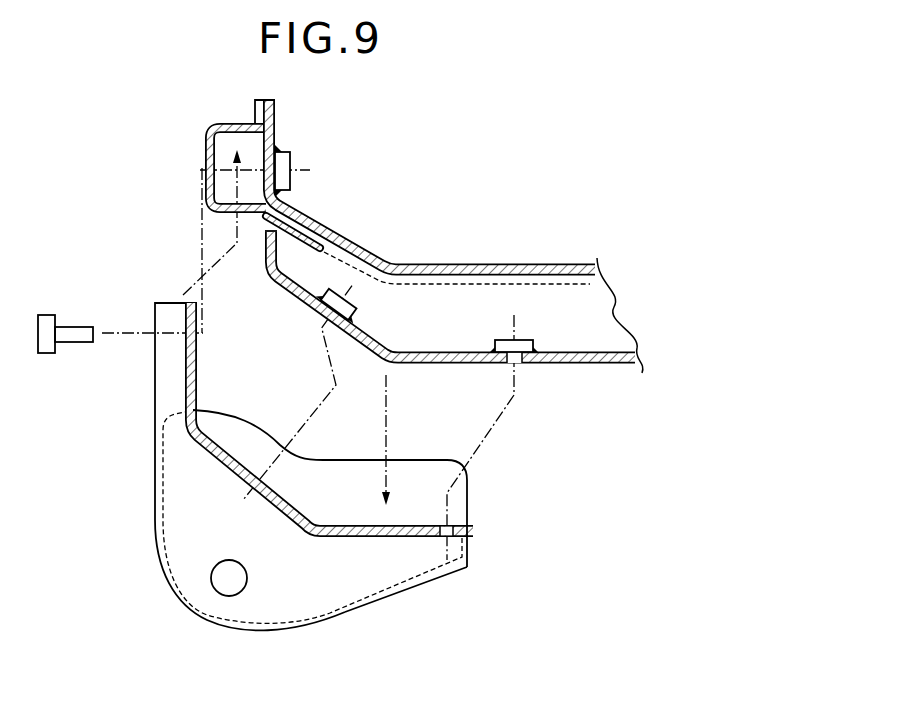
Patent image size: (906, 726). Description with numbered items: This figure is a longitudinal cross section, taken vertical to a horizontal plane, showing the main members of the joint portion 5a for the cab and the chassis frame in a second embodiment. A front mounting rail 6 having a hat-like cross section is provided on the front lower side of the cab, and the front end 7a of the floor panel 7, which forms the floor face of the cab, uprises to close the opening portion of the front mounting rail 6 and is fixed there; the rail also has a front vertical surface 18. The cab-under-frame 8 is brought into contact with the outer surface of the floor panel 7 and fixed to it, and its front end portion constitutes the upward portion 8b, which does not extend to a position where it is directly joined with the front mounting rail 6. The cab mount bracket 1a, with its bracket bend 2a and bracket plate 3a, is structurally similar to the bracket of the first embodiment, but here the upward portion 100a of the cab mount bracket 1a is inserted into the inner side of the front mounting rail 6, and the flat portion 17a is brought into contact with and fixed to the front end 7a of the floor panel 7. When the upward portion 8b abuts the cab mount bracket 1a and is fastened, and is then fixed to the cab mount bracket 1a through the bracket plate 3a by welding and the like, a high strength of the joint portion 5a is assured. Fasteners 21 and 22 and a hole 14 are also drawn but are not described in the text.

The front vertical surface 18 is at (207, 142).
The front end 7a is at (277, 128).
The bolt 22 is at (291, 173).
The front mounting rail 6 is at (207, 203).
The upward portion 8b is at (277, 260).
The floor panel 7 is at (520, 265).
The cab-under-frame 8 is at (580, 333).
The bolt 21 is at (45, 355).
The upward portion 100a is at (167, 363).
The flat portion 17a is at (198, 362).
The bracket plate 3a is at (468, 490).
The bracket bend 2a is at (417, 597).
The cab mount bracket 1a is at (207, 630).
The joint portion 5a is at (309, 692).
The hole 14 is at (225, 580).